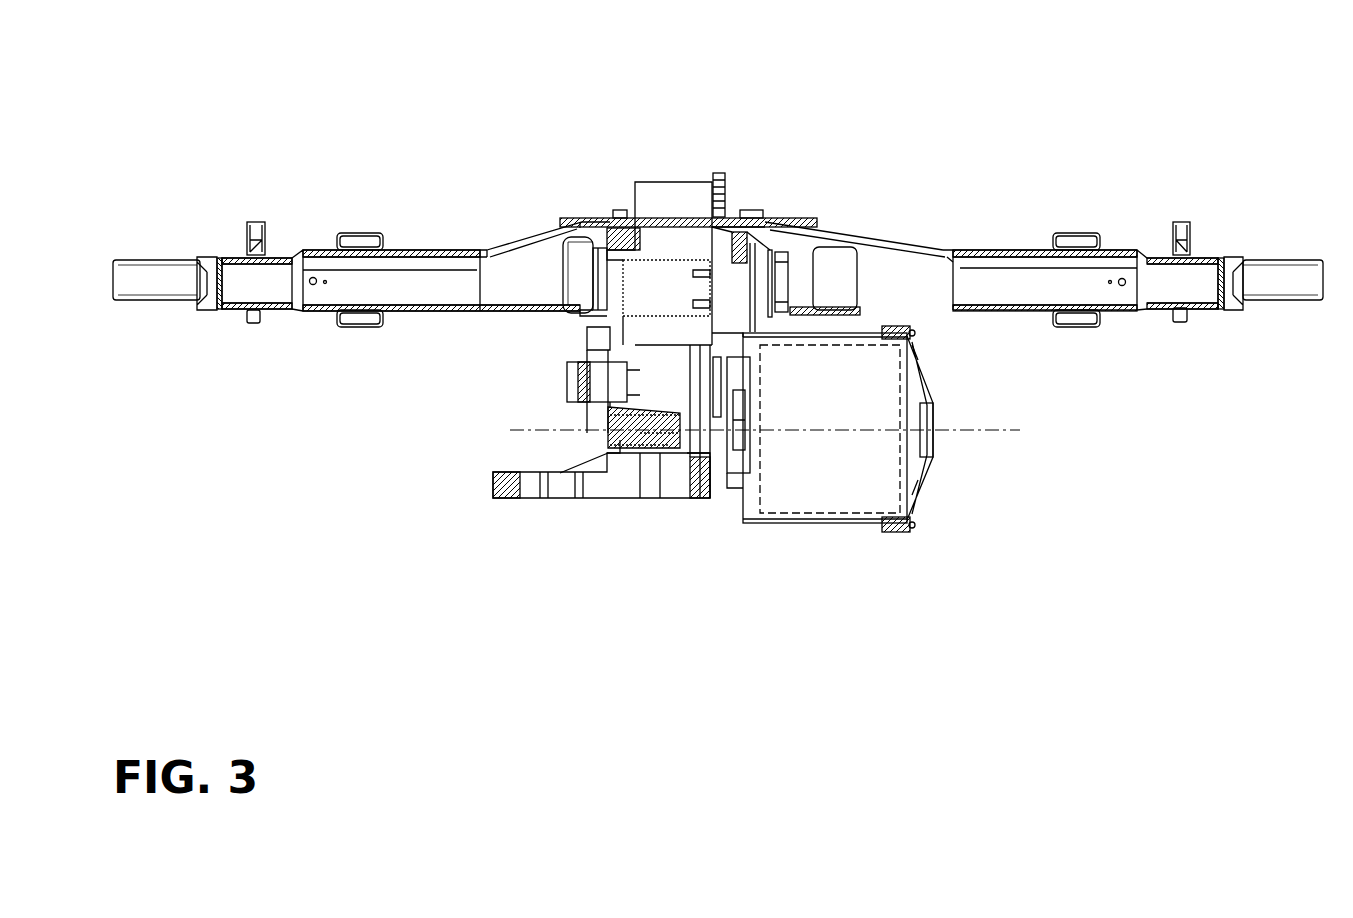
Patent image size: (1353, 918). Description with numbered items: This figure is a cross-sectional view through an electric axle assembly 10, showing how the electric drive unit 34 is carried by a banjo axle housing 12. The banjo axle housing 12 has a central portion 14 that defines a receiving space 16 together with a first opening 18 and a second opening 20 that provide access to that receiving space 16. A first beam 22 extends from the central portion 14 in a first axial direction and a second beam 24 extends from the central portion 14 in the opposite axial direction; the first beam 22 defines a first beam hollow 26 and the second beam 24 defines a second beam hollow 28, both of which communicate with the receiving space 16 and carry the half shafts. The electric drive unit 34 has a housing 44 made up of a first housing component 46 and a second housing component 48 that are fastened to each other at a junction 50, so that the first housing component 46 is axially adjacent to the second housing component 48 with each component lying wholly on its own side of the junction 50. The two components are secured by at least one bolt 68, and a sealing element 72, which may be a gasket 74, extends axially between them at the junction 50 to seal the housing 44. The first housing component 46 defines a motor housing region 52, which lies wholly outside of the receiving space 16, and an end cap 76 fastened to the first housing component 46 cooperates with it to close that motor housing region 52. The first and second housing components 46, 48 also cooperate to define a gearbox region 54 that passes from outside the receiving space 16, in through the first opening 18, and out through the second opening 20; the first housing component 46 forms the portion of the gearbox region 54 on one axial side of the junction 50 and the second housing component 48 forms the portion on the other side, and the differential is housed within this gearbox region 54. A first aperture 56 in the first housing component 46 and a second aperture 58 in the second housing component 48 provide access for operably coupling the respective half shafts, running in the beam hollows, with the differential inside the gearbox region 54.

The electric axle assembly 10 is at (940, 90).
The banjo axle housing 12 is at (927, 241).
The central portion 14 is at (813, 268).
The receiving space 16 is at (807, 242).
The first opening 18 is at (600, 318).
The second opening 20 is at (736, 210).
The first beam 22 is at (1008, 267).
The second beam 24 is at (385, 277).
The first beam hollow 26 is at (1095, 283).
The second beam hollow 28 is at (415, 280).
The electric drive unit 34 is at (861, 535).
The housing 44 is at (635, 478).
The first housing component 46 is at (720, 377).
The second housing component 48 is at (683, 398).
The junction 50 is at (700, 370).
The motor housing region 52 is at (882, 461).
The gearbox region 54 is at (670, 275).
The first aperture 56 is at (791, 292).
The second aperture 58 is at (585, 276).
The bolt 68 is at (735, 212).
The sealing element 72 is at (708, 405).
The gasket 74 is at (705, 421).
The end cap 76 is at (925, 375).